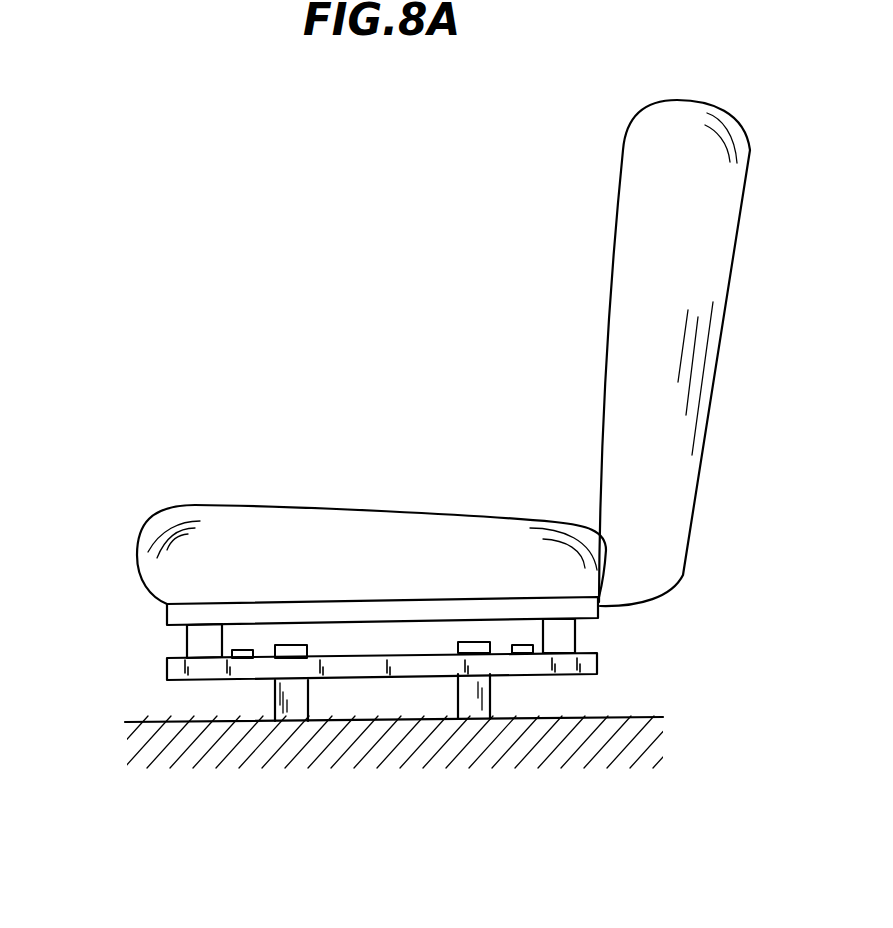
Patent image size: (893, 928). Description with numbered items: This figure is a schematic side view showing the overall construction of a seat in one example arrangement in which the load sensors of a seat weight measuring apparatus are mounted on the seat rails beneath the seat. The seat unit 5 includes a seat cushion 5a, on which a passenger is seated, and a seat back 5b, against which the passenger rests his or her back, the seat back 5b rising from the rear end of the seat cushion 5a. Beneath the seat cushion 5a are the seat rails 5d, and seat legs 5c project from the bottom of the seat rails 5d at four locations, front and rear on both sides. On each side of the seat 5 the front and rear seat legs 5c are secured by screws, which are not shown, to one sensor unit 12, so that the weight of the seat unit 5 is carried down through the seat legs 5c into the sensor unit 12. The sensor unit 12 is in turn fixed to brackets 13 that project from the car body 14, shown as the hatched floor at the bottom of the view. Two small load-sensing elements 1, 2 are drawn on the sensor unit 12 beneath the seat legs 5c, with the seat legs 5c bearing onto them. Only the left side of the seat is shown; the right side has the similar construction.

The first sensor 1 is at (245, 650).
The second sensor 2 is at (521, 645).
The seat unit 5 is at (436, 338).
The seat cushion 5a is at (318, 534).
The seat back 5b is at (623, 430).
The seat legs 5c is at (195, 643).
The seat rails 5d is at (180, 616).
The sensor unit 12 is at (520, 667).
The brackets 13 is at (465, 693).
The car body 14 is at (603, 713).